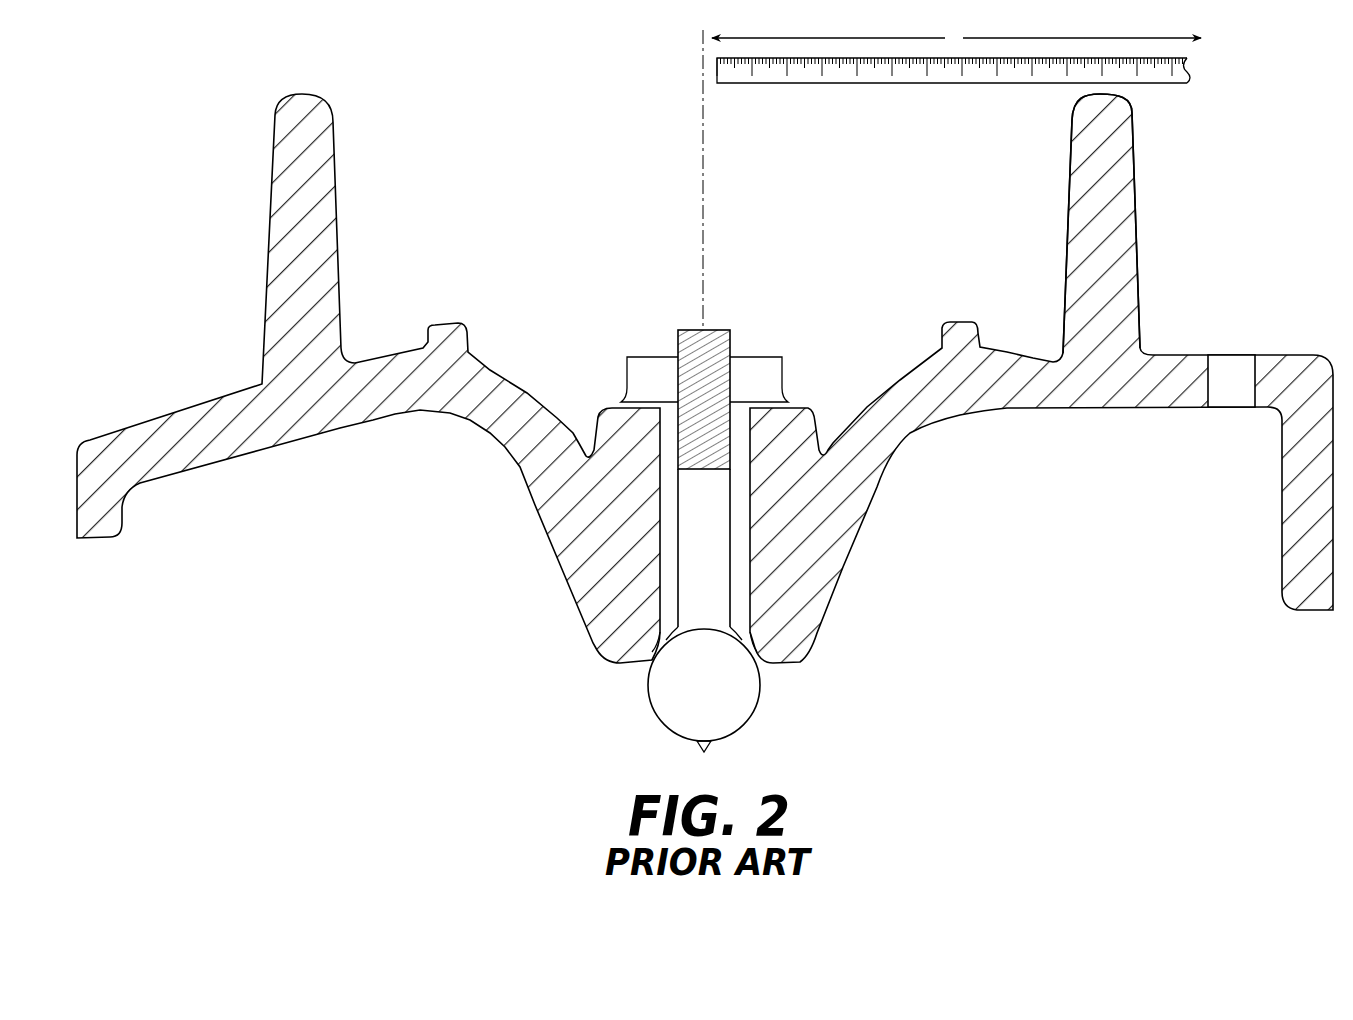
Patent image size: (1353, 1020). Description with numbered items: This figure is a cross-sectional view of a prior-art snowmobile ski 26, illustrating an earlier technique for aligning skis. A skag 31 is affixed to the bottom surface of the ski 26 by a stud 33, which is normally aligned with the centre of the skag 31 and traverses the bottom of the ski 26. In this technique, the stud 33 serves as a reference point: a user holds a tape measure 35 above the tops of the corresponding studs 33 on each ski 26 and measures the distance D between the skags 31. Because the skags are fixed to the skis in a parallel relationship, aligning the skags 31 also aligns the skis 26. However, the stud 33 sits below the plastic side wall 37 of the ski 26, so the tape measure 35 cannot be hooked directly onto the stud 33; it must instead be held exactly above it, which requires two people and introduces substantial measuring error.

The ski 26 is at (530, 595).
The skag 31 is at (757, 713).
The stud 33 is at (754, 337).
The tape measure 35 is at (873, 83).
The plastic side wall 37 is at (1137, 188).